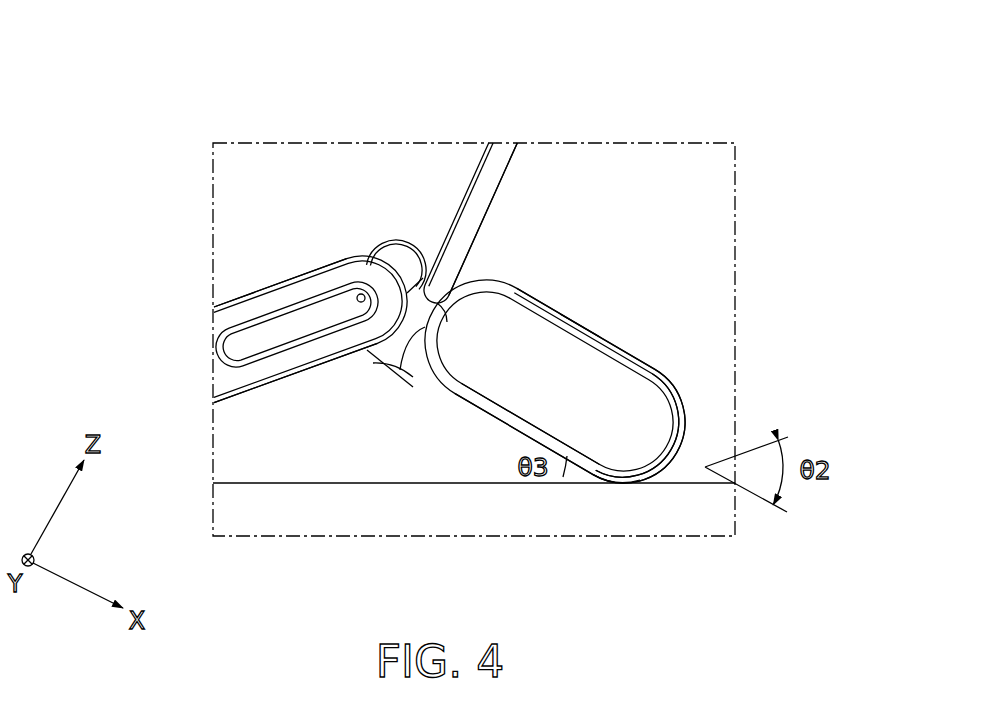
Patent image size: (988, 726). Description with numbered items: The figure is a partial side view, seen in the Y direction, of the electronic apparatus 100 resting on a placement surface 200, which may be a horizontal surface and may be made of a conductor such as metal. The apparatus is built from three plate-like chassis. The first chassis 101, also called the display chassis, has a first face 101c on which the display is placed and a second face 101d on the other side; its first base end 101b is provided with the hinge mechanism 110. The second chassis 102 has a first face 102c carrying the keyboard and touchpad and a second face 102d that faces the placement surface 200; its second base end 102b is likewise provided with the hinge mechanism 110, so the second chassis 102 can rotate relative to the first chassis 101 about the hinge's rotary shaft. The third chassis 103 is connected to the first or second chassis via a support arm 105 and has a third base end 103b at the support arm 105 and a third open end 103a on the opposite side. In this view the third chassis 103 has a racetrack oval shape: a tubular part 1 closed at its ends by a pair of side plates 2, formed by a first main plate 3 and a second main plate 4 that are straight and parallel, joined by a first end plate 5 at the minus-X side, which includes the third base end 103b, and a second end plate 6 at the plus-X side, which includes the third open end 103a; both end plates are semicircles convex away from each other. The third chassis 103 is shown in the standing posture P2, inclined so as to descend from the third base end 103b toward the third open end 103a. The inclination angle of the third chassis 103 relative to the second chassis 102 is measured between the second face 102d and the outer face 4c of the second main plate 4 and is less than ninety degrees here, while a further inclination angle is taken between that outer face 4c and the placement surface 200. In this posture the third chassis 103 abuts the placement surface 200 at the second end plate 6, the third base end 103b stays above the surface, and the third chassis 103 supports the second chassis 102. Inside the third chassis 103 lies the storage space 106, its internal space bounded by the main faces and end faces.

The electronic apparatus 100 is at (545, 110).
The first chassis 101 is at (511, 166).
The first base end 101b is at (433, 319).
The first face of first chassis 101c is at (470, 184).
The second face of first chassis 101d is at (500, 190).
The second chassis 102 is at (257, 289).
The second base end 102b is at (400, 241).
The first face of second chassis 102c is at (310, 271).
The second face of second chassis 102d is at (272, 384).
The third chassis 103 is at (546, 304).
The third open end 103a is at (676, 446).
The third base end 103b is at (413, 334).
The support arm 105 is at (400, 378).
The storage space 106 is at (623, 447).
The hinge mechanism 110 is at (361, 294).
The placement surface 200 is at (257, 482).
The tubular part 1 is at (650, 362).
The side plate 2 is at (612, 383).
The first main plate 3 is at (607, 342).
The second main plate 4 is at (462, 401).
The outer face of second main plate 4c is at (500, 408).
The first end plate 5 is at (414, 382).
The second end plate 6 is at (686, 418).
The standing posture P2 is at (585, 327).